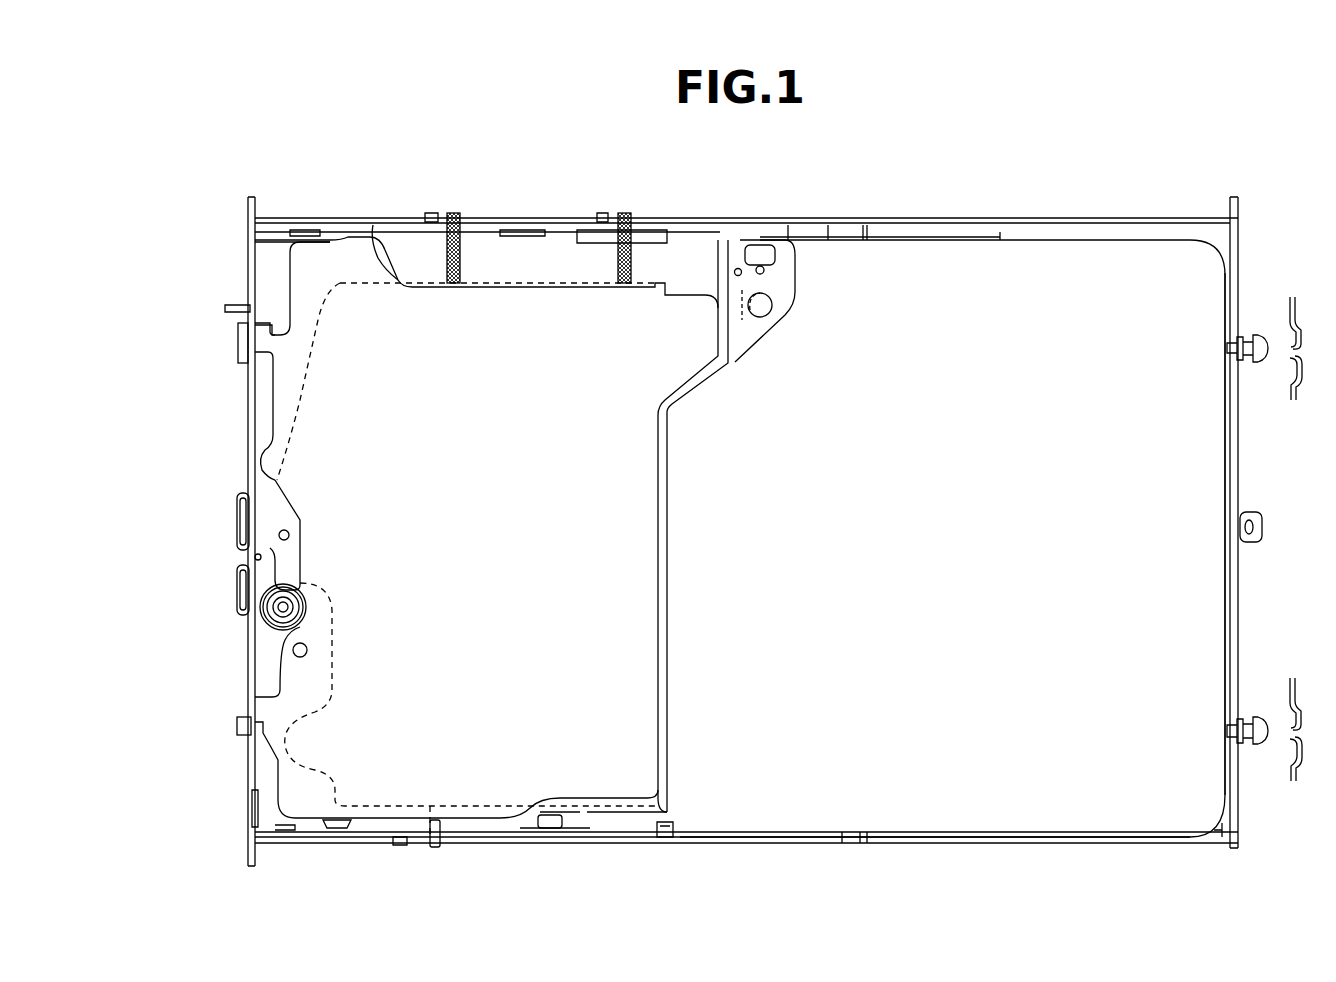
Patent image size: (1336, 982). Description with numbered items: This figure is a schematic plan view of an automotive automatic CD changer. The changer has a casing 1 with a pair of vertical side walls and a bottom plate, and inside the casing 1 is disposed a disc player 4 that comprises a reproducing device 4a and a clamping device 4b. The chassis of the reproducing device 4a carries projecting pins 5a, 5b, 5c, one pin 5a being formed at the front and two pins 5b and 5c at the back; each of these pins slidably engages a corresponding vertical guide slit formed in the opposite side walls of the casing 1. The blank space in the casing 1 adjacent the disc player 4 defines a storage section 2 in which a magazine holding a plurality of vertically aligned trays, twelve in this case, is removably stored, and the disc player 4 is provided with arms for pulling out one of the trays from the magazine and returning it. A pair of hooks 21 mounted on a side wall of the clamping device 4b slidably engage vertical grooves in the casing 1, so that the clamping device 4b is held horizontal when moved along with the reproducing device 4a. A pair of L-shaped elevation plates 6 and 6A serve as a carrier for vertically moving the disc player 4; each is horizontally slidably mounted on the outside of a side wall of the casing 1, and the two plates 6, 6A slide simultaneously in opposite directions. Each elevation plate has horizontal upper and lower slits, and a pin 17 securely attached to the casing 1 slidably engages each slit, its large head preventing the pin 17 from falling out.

The casing 1 is at (555, 240).
The storage section 2 is at (1145, 260).
The disc player 4 is at (331, 293).
The reproducing device 4a is at (297, 147).
The clamping device 4b is at (315, 268).
The pin 5a is at (436, 848).
The pin 5b is at (455, 213).
The pin 5c is at (630, 213).
The elevation plate 6 is at (517, 830).
The elevation plate 6A is at (720, 235).
The pin 17 is at (865, 232).
The hook 21 is at (238, 345).